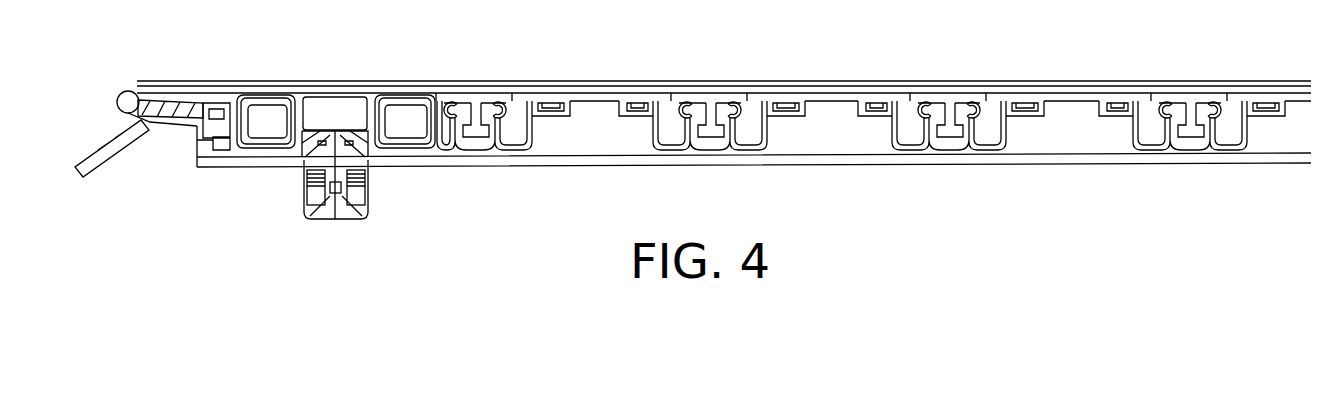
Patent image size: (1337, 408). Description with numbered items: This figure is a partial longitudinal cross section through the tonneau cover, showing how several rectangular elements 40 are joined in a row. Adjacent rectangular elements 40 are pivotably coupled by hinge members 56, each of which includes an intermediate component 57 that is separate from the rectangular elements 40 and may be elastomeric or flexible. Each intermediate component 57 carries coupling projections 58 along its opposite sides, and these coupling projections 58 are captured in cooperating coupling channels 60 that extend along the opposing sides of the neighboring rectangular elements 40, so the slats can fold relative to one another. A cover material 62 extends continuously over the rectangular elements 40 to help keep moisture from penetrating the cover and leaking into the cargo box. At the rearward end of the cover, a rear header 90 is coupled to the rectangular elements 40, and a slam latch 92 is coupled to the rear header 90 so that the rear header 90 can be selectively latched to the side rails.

The rectangular element 40 is at (590, 131).
The hinge member 56 is at (721, 138).
The intermediate component 57 is at (718, 95).
The coupling projection 58 is at (928, 112).
The coupling channel 60 is at (690, 122).
The cover material 62 is at (1075, 84).
The rear header 90 is at (410, 184).
The slam latch 92 is at (352, 244).